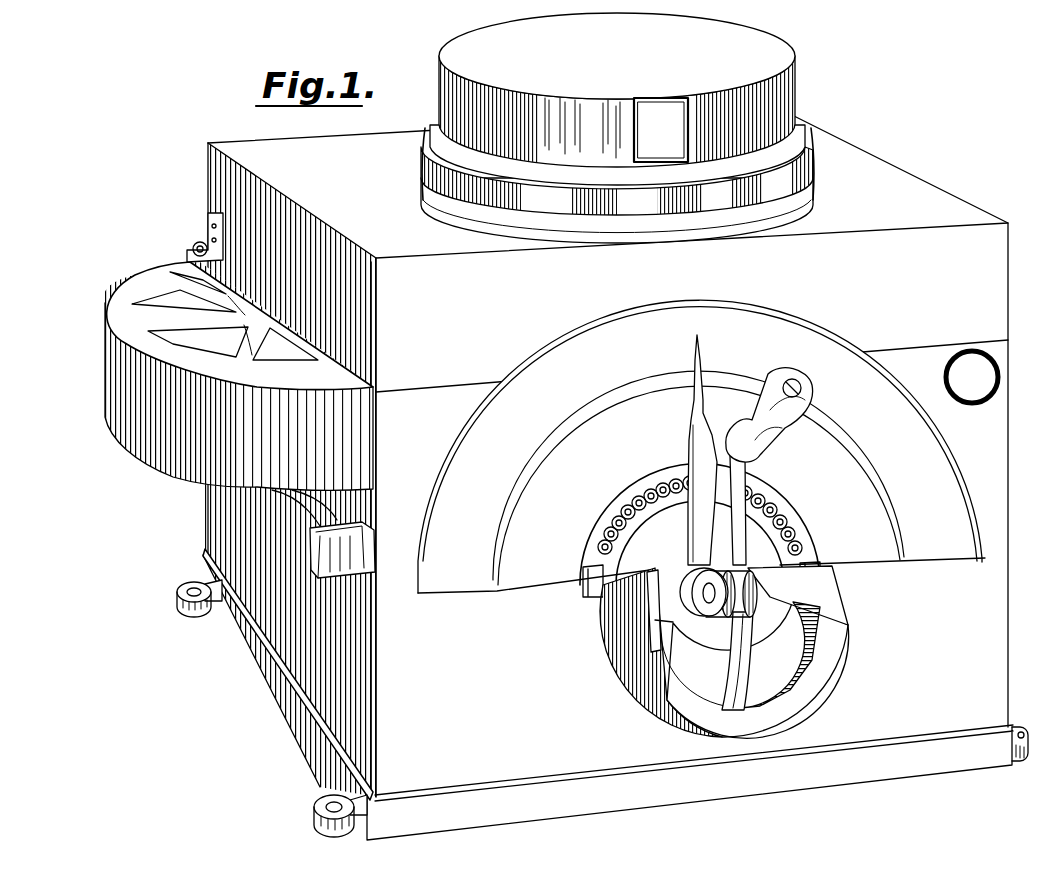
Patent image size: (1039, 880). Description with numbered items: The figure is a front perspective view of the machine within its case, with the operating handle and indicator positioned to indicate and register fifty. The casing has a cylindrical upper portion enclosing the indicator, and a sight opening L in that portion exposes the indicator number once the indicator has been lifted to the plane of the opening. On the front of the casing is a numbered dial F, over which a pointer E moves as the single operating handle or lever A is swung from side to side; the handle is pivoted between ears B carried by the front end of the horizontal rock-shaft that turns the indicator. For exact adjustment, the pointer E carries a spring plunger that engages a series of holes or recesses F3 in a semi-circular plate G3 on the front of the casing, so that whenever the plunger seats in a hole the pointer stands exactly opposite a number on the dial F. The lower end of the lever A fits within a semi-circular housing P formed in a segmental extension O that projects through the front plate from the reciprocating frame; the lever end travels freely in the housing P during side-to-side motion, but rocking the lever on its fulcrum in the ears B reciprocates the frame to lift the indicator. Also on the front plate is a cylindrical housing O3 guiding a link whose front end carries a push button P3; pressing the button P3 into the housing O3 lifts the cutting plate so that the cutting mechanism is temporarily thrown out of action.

The sight opening L is at (663, 103).
The numbered dial F is at (716, 309).
The pointer E is at (695, 431).
The holes or recesses F3 is at (641, 505).
The semi-circular plate G3 is at (609, 513).
The operating handle or lever A is at (728, 483).
The ears B is at (697, 580).
The semi-circular housing P is at (782, 683).
The segmental extension O is at (833, 660).
The push button P3 is at (972, 377).
The cylindrical housing O3 is at (1000, 375).